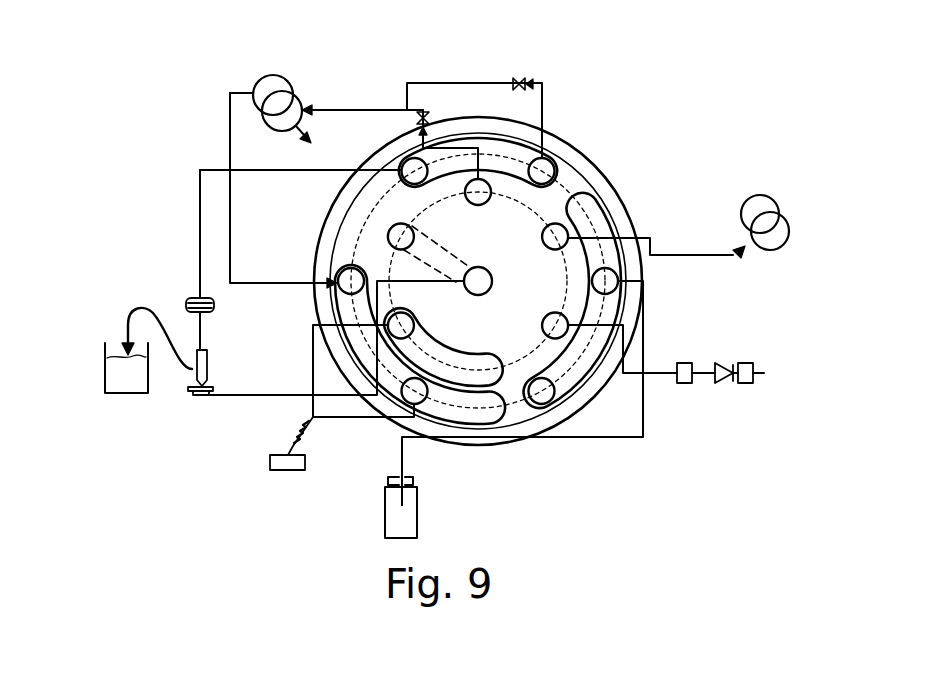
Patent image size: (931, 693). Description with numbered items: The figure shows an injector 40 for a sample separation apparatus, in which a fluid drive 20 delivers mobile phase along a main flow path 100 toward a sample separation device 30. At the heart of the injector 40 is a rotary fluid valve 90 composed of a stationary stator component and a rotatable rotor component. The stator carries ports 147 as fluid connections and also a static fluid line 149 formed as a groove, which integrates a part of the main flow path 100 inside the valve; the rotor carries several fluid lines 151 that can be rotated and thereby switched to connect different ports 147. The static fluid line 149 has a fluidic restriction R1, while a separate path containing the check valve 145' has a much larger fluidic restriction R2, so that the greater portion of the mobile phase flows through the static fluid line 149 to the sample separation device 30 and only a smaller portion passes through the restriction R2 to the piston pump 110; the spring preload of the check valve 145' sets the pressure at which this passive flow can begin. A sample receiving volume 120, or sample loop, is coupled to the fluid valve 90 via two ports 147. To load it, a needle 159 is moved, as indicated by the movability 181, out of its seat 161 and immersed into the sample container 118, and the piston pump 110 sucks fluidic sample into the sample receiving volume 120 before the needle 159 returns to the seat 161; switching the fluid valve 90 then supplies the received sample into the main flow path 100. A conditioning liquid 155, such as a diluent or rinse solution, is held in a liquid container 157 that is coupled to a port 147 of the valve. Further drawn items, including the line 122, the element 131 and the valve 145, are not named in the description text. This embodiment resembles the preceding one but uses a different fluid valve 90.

The fluid drive 20 is at (762, 195).
The sample separation device 30 is at (743, 362).
The injector 40 is at (228, 72).
The rotary fluid valve 90 is at (392, 422).
The main flow path 100 is at (653, 372).
The piston pump 110 is at (272, 75).
The sample container 118 is at (108, 396).
The sample receiving volume 120 is at (196, 296).
The fluid line 122 is at (248, 115).
The controller 131 is at (270, 466).
The valve 145 is at (494, 68).
The check valve 145' is at (453, 113).
The ports 147 is at (338, 272).
The static fluid line 149 is at (556, 264).
The fluid lines of the rotor component 151 is at (537, 150).
The conditioning liquid 155 is at (406, 528).
The liquid container 157 is at (418, 492).
The needle 159 is at (210, 360).
The seat 161 is at (190, 396).
The movement of the needle 181 is at (141, 306).
The fluidic restriction R1 is at (582, 283).
The fluidic restriction R2 is at (478, 264).